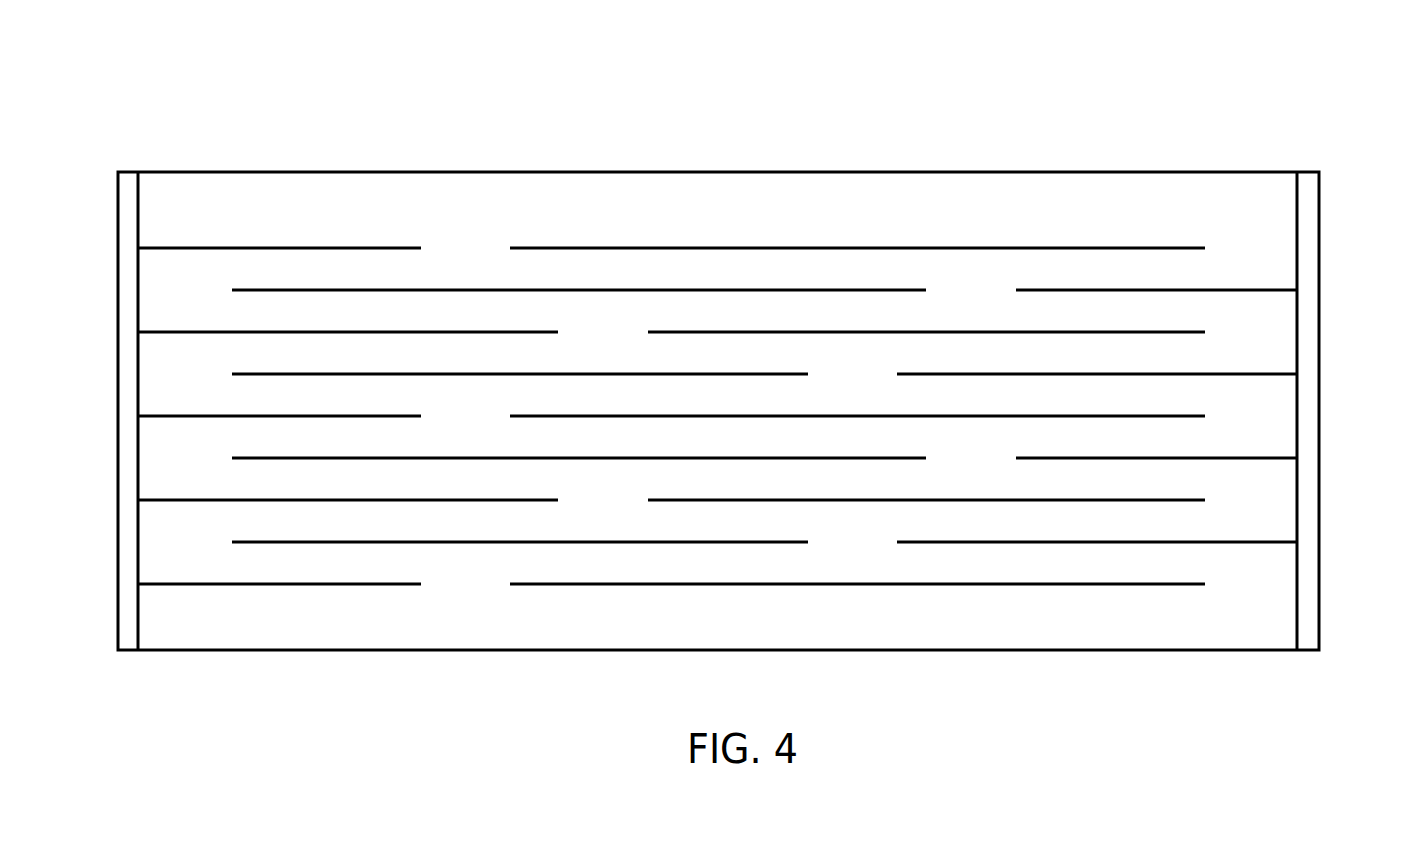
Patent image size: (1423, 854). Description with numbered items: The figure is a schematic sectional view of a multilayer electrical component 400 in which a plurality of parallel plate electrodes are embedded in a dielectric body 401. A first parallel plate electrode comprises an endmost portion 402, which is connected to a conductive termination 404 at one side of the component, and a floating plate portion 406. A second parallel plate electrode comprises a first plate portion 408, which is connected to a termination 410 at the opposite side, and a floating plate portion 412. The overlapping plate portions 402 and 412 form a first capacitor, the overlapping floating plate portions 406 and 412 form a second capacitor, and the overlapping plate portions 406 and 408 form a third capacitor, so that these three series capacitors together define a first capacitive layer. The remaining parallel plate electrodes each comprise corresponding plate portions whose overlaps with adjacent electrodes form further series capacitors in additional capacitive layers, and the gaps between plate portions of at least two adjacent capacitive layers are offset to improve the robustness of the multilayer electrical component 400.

The multilayer electrical component 400 is at (128, 66).
The dielectric body 401 is at (1033, 210).
The endmost portion 402 is at (326, 247).
The conductive termination 404 is at (118, 412).
The floating plate portion 406 is at (718, 247).
The first plate portion 408 is at (1250, 289).
The termination 410 is at (1319, 412).
The floating plate portion 412 is at (470, 289).